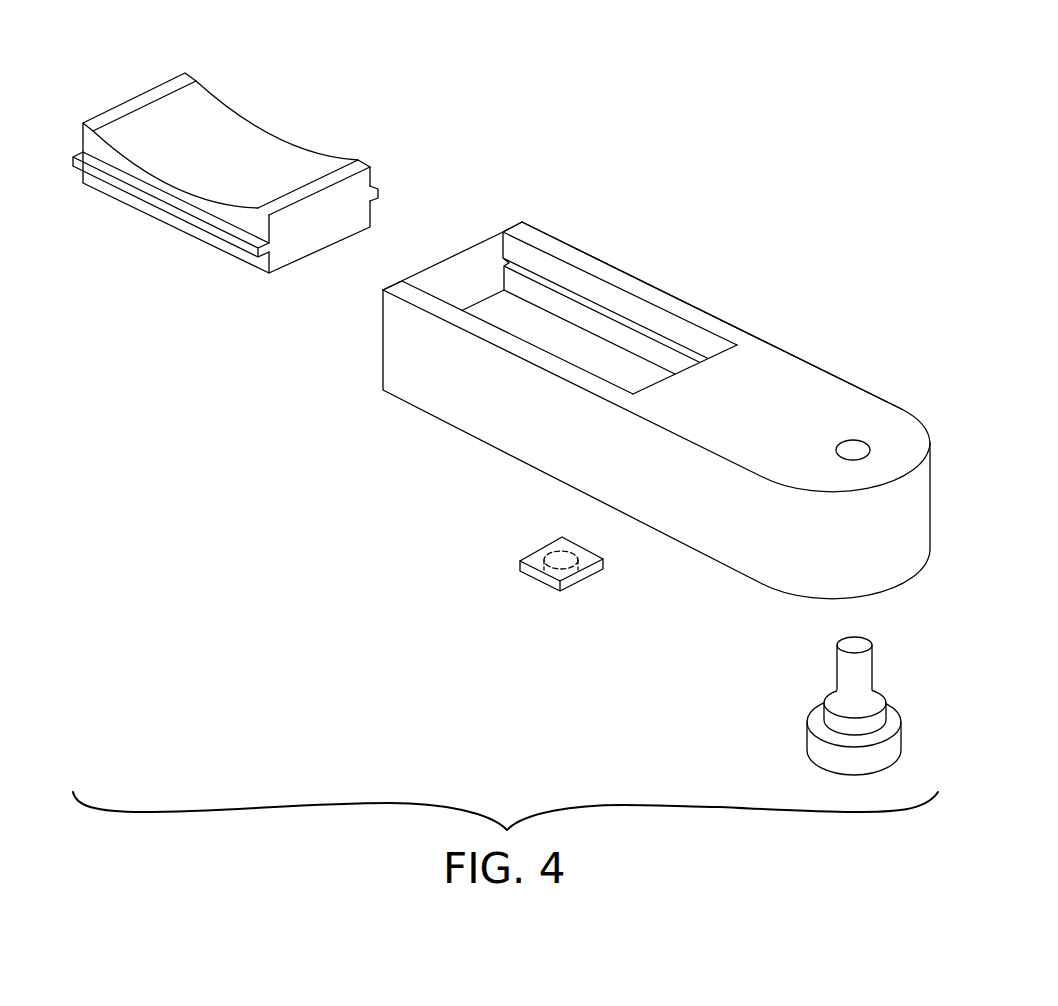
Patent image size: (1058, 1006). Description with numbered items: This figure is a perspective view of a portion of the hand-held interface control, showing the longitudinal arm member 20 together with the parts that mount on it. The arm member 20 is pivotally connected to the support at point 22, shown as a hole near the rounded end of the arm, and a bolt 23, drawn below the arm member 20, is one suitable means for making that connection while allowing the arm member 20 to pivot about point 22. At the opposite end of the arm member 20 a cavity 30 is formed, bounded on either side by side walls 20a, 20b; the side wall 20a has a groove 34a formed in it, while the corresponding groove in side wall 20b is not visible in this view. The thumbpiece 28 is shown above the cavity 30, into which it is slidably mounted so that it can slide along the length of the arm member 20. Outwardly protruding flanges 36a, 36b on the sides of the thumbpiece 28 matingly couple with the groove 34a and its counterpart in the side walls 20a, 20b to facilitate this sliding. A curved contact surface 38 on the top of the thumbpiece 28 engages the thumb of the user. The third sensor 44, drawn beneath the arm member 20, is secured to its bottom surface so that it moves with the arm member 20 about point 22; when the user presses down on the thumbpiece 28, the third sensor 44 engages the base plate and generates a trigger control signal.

The longitudinal arm member 20 is at (663, 377).
The side wall 20a is at (662, 297).
The side wall 20b is at (525, 350).
The point 22 is at (857, 436).
The bolt 23 is at (860, 665).
The thumbpiece 28 is at (253, 84).
The cavity 30 is at (477, 285).
The groove 34a is at (578, 300).
The outwardly protruding flange 36a is at (380, 192).
The outwardly protruding flange 36b is at (230, 243).
The curved contact surface 38 is at (247, 150).
The third sensor 44 is at (520, 566).